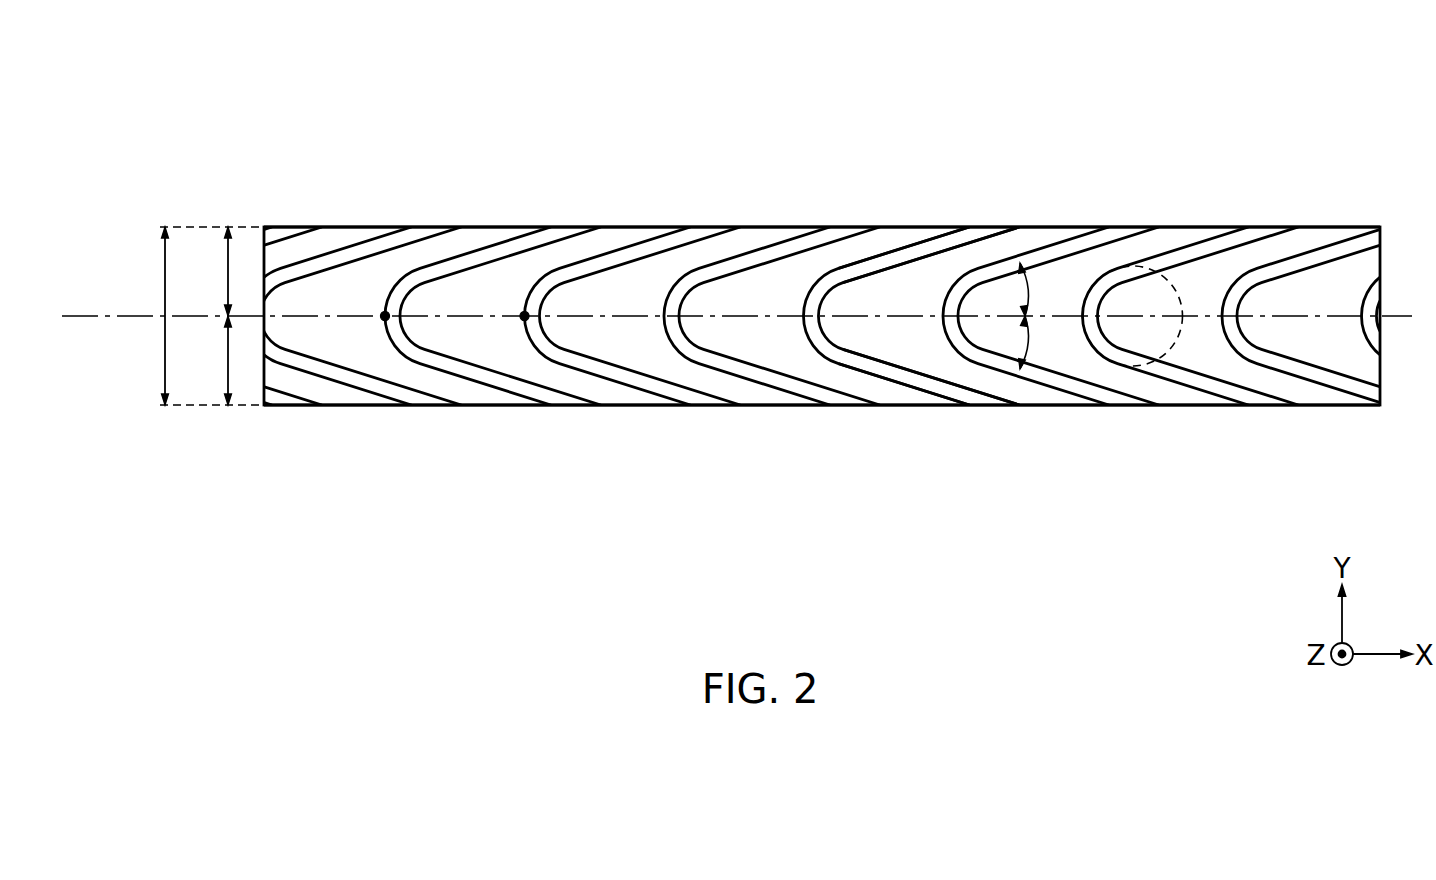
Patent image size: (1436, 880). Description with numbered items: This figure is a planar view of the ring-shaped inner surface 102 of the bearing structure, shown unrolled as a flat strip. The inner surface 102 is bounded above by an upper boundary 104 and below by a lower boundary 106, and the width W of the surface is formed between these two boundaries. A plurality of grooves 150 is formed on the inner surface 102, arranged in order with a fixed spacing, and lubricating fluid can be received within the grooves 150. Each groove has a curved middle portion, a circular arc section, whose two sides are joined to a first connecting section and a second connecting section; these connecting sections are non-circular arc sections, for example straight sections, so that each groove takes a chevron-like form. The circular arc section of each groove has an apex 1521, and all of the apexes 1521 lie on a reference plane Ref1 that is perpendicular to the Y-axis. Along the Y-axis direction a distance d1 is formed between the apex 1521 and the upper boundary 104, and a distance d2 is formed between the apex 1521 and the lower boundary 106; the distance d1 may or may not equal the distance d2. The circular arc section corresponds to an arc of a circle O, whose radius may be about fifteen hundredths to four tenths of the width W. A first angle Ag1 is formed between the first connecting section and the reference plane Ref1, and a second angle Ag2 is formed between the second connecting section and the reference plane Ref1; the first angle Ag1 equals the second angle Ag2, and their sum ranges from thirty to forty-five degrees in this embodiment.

The inner surface 102 is at (203, 105).
The upper boundary 104 is at (396, 227).
The lower boundary 106 is at (382, 406).
The grooves 150 is at (771, 278).
The apex 1521 is at (385, 318).
The reference plane Ref1 is at (108, 316).
The width W is at (197, 316).
The distance d1 is at (209, 271).
The distance d2 is at (209, 360).
The first angle Ag1 is at (1025, 284).
The second angle Ag2 is at (1025, 350).
The circle O is at (1177, 336).